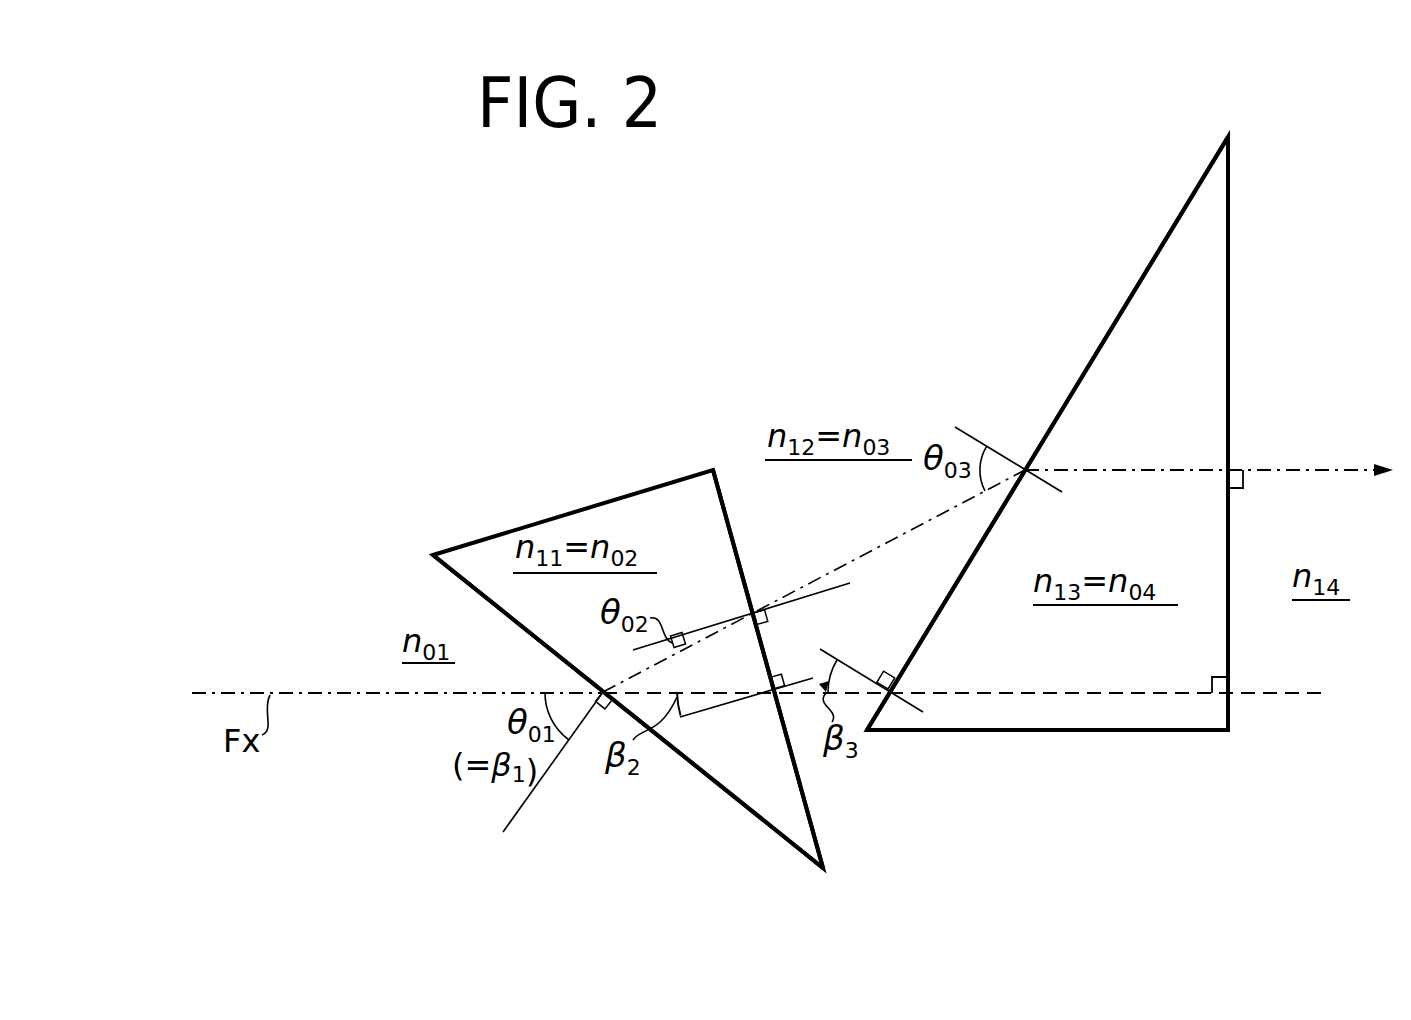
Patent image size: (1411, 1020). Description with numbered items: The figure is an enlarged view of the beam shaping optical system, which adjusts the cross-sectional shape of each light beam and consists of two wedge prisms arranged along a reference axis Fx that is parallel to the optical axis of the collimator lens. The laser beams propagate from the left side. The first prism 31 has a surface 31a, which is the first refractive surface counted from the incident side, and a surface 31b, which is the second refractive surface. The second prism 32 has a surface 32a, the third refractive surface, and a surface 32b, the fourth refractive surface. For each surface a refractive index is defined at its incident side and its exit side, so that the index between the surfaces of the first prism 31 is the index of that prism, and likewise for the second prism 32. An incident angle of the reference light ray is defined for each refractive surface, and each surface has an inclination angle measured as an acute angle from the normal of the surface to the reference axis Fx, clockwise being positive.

The first wedge prism 31 is at (587, 507).
The surface 31a is at (717, 787).
The surface 31b is at (733, 540).
The second wedge prism 32 is at (1063, 730).
The surface 32a is at (1102, 332).
The surface 32b is at (1230, 365).